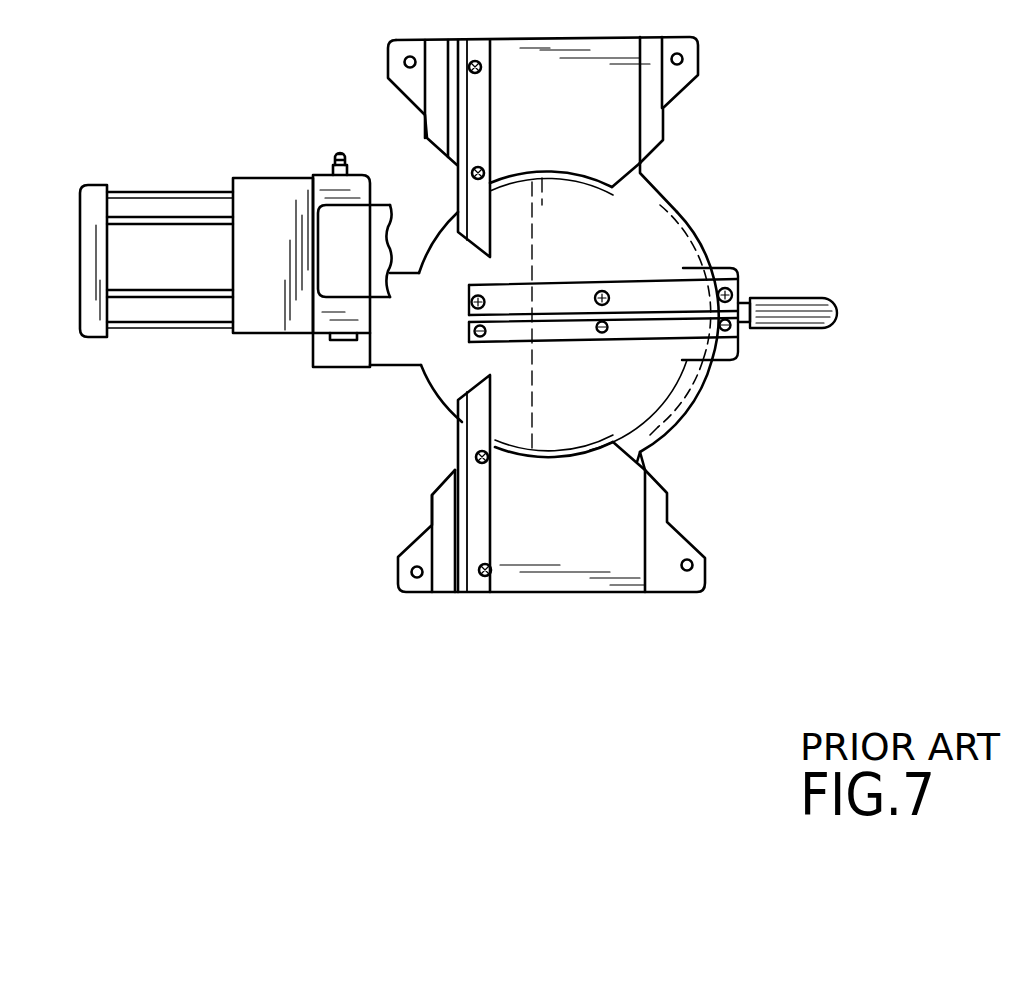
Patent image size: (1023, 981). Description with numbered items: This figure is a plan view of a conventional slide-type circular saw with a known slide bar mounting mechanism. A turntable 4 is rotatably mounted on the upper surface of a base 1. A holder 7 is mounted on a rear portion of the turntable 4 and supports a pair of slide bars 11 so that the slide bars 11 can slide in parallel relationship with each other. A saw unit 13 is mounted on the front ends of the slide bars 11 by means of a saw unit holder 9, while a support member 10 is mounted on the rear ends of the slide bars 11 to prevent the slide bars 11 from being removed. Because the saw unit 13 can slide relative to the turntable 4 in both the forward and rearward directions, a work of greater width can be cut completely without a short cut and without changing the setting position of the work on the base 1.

The base 1 is at (407, 583).
The turntable 4 is at (642, 230).
The holder 7 is at (257, 333).
The saw unit holder 9 is at (320, 183).
The support member 10 is at (97, 340).
The slide bars 11 is at (153, 192).
The saw unit 13 is at (383, 207).